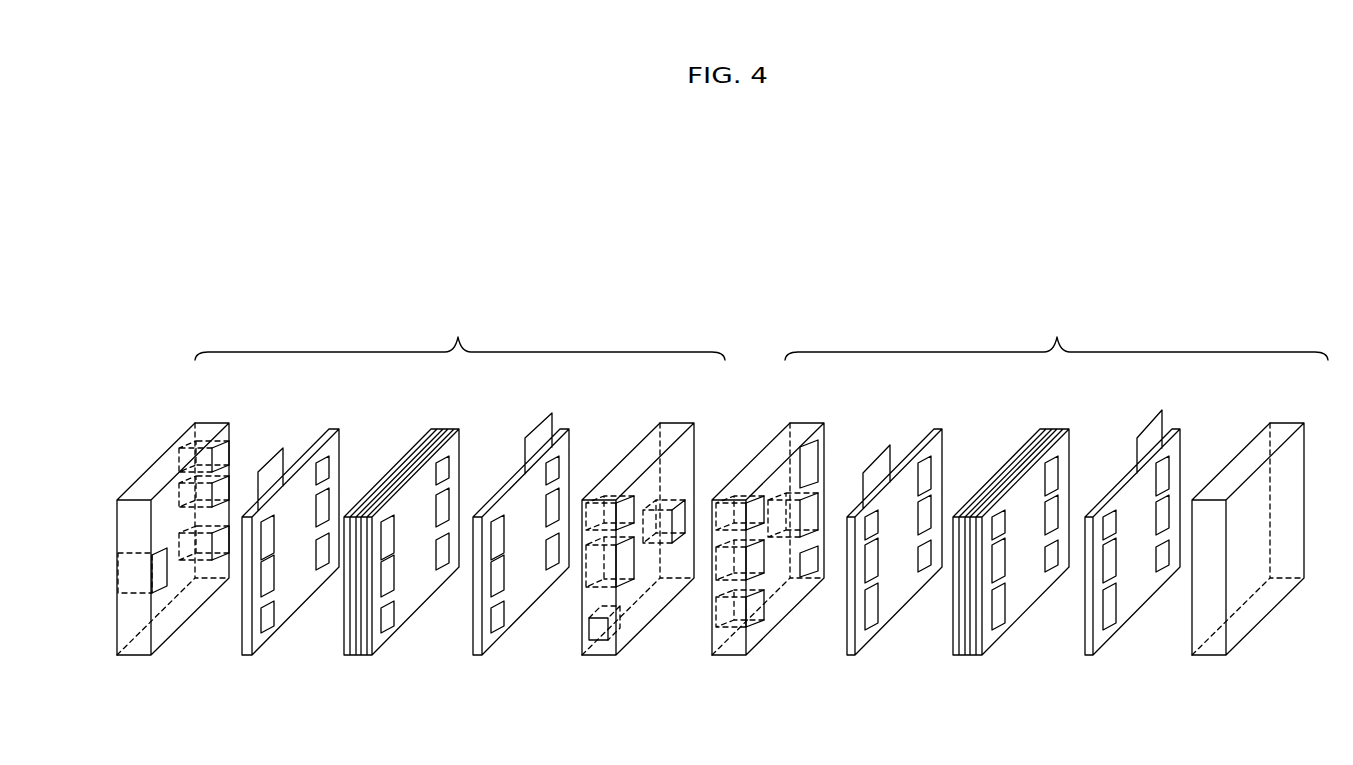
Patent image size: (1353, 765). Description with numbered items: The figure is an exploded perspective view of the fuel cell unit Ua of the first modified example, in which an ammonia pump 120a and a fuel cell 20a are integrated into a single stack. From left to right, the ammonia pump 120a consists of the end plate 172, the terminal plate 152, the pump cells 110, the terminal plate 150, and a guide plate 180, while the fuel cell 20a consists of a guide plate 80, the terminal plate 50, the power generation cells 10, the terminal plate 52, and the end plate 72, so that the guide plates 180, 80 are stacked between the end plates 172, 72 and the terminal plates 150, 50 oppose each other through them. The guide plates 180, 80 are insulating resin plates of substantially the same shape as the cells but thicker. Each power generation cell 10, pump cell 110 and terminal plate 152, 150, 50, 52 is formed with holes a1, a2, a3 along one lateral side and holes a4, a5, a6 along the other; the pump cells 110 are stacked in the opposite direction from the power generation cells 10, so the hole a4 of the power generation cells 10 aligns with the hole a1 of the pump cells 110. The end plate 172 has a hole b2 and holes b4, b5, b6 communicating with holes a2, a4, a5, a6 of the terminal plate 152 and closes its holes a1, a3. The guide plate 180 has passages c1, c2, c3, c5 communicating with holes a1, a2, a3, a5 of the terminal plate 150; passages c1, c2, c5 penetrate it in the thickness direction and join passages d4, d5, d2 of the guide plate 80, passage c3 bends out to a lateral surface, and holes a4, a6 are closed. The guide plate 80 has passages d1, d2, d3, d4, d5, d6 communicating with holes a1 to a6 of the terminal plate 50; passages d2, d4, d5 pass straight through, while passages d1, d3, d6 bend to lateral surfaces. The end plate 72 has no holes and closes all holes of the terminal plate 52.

The fuel cell unit Ua is at (833, 243).
The ammonia pump 120a is at (460, 334).
The fuel cell 20a is at (1056, 335).
The end plate 172 is at (213, 422).
The terminal plate 152 is at (335, 427).
The pump cells 110 is at (447, 427).
The terminal plate 150 is at (567, 427).
The guide plate 180 is at (683, 422).
The guide plate 80 is at (808, 422).
The terminal plate 50 is at (940, 427).
The power generation cells 10 is at (1060, 427).
The terminal plate 52 is at (1180, 427).
The end plate 72 is at (1292, 423).
The hole a1 is at (268, 515).
The hole a2 is at (268, 573).
The hole a3 is at (265, 617).
The hole a4 is at (335, 440).
The hole a5 is at (318, 487).
The hole a6 is at (323, 560).
The hole b2 is at (130, 579).
The hole b4 is at (213, 470).
The hole b5 is at (215, 507).
The hole b6 is at (218, 557).
The passage c1 is at (632, 500).
The passage c2 is at (630, 567).
The passage c3 is at (598, 640).
The passage c5 is at (680, 503).
The passage d1 is at (820, 447).
The passage d2 is at (820, 500).
The passage d3 is at (810, 573).
The passage d4 is at (757, 503).
The passage d5 is at (762, 573).
The passage d6 is at (757, 627).